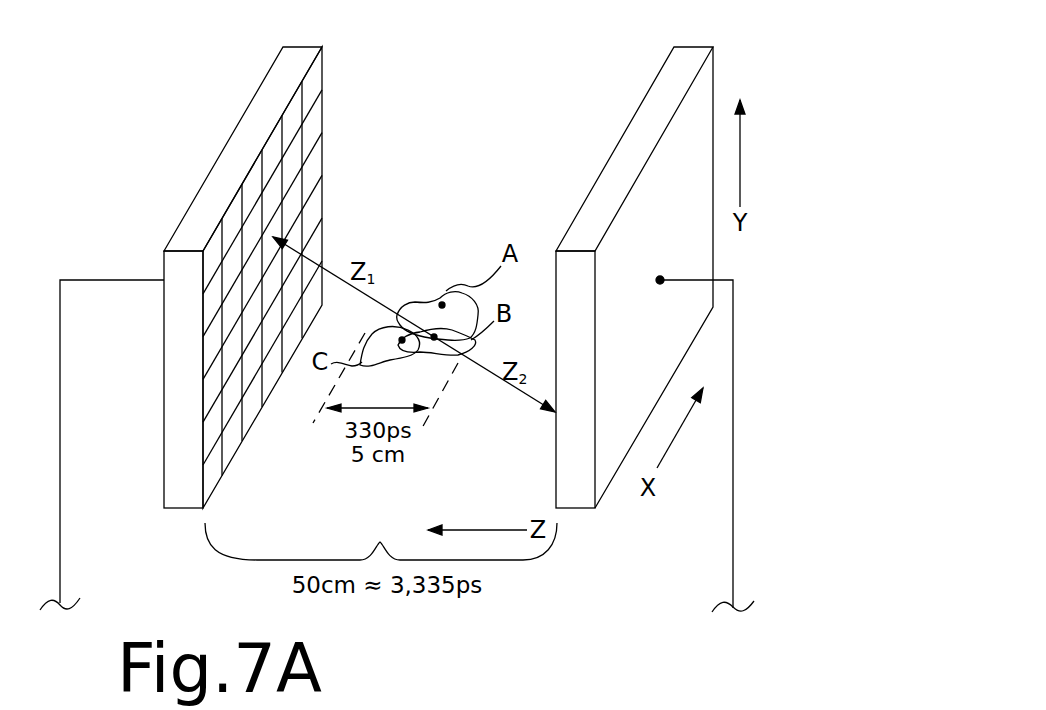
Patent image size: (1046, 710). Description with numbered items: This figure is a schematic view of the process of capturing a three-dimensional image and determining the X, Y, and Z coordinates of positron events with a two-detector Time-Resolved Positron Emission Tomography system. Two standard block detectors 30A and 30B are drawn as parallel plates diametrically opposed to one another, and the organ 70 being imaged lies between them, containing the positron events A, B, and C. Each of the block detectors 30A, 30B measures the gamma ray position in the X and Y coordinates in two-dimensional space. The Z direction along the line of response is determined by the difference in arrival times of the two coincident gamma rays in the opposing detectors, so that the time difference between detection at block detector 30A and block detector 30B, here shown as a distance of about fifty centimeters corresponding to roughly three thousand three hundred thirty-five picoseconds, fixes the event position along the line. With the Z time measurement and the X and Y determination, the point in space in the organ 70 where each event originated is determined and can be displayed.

The block detector 30A is at (260, 127).
The block detector 30B is at (677, 77).
The organ 70 is at (397, 316).